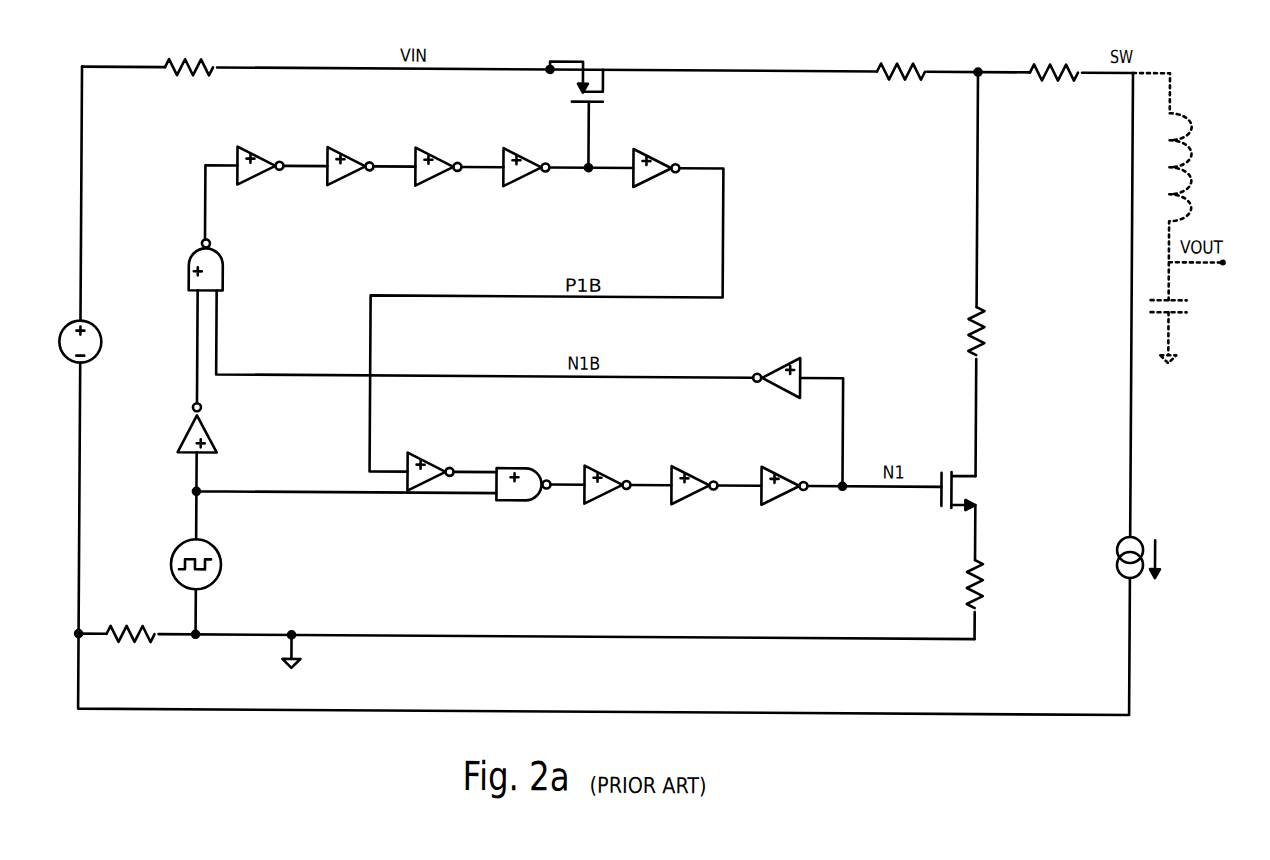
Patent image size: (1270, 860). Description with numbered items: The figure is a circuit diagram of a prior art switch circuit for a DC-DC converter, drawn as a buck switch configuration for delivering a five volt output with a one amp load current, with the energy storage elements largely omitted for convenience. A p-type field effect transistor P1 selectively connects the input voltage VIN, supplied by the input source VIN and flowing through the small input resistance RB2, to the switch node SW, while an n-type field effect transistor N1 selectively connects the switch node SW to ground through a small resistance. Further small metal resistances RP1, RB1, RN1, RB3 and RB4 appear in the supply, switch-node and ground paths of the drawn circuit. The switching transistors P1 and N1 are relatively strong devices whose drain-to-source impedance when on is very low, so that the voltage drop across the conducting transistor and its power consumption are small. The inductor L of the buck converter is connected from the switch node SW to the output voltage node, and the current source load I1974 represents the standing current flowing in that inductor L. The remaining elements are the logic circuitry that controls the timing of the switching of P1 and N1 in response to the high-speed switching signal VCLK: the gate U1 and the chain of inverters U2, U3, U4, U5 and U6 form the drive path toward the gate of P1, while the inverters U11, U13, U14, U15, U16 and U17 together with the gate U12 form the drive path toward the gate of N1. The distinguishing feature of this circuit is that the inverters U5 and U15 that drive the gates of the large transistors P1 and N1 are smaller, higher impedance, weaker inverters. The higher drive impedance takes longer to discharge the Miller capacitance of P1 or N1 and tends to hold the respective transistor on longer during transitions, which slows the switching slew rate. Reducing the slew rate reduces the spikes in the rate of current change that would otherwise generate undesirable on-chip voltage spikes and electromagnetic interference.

The resistor RB2 is at (189, 40).
The resistor RP1 (0.1) RP1 is at (901, 43).
The resistor RB1 (0.05) RB1 is at (1054, 44).
The resistor RN1 (0.1) RN1 is at (1002, 335).
The resistor RB3 (0.05) RB3 is at (1000, 588).
The resistor RB4 (0.05) RB4 is at (131, 606).
The PMOS field effect transistor P1 is at (580, 91).
The NMOS field effect transistor N1 is at (984, 482).
The NAND gate U1 is at (221, 264).
The inverter U2 is at (255, 179).
The inverter U3 is at (347, 179).
The inverter U4 is at (434, 180).
The inverter U5 is at (523, 180).
The inverter U6 is at (653, 180).
The inverter U11 is at (430, 463).
The NAND gate U12 is at (523, 499).
The inverter U13 is at (605, 498).
The inverter U14 is at (691, 498).
The inverter U15 is at (781, 499).
The inverter U16 is at (776, 392).
The inverter U17 is at (183, 427).
The high-speed switching signal VCLK is at (216, 563).
The input voltage VIN is at (88, 329).
The current source load I1974 is at (1174, 562).
The inductor L is at (1179, 218).